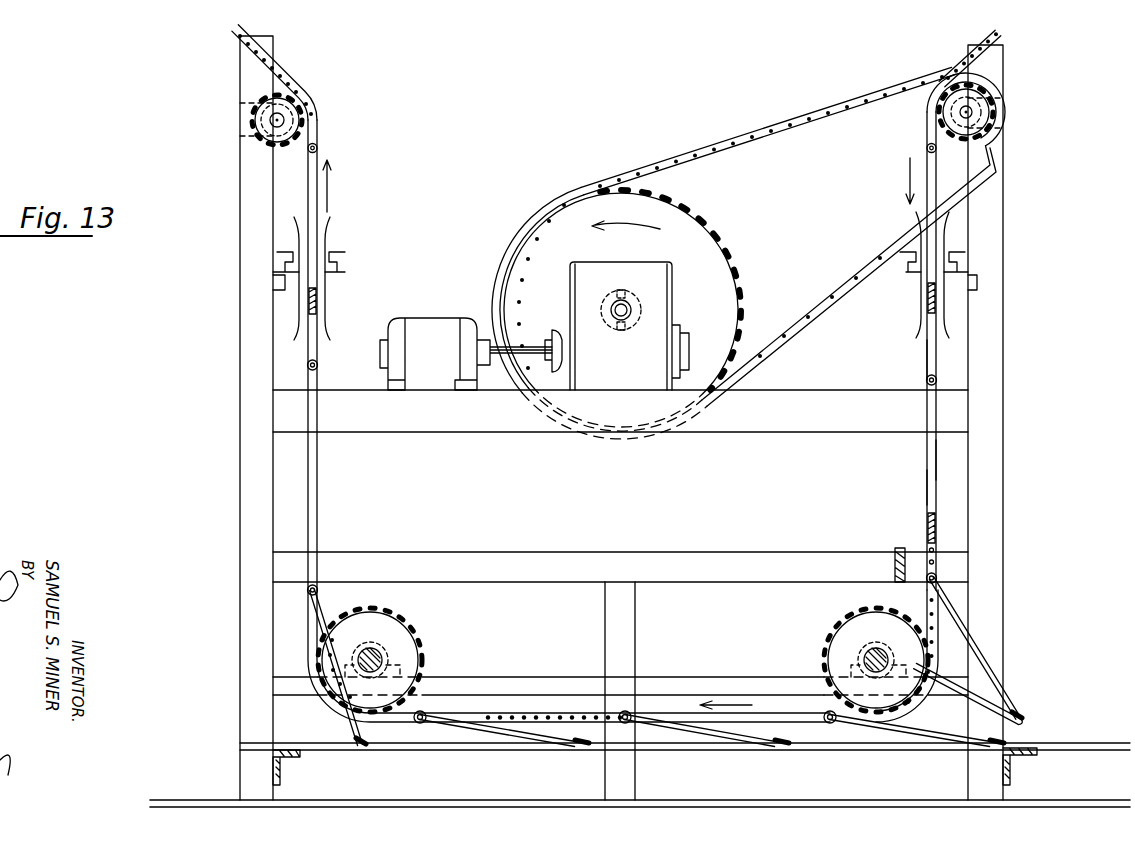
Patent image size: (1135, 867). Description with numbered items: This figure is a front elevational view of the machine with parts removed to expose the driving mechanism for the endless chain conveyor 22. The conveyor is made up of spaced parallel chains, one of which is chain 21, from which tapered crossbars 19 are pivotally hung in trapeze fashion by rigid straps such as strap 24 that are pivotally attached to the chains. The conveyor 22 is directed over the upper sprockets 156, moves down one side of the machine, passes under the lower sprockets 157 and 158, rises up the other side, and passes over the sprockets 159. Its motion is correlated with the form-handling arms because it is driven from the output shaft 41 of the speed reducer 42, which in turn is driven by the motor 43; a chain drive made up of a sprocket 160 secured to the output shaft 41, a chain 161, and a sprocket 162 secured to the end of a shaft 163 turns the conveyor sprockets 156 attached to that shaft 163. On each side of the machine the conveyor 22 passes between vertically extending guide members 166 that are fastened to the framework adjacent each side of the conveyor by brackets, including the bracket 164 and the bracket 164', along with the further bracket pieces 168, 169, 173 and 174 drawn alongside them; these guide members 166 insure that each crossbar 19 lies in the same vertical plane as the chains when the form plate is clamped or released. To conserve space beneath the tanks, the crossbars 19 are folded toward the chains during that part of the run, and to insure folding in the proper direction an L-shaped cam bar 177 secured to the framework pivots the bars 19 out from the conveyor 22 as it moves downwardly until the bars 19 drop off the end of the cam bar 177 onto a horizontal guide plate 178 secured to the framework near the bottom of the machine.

The tapered crossbar 19 is at (305, 298).
The chain 21 is at (930, 355).
The endless chain conveyor 22 is at (963, 458).
The rigid strap 24 is at (928, 482).
The output shaft 41 is at (632, 296).
The speed reducer 42 is at (673, 298).
The motor 43 is at (430, 328).
The sprocket 156 is at (984, 120).
The sprocket 157 is at (830, 642).
The sprocket 158 is at (413, 643).
The sprocket 159 is at (250, 124).
The sprocket 160 is at (710, 233).
The chain 161 is at (722, 155).
The sprocket 162 is at (920, 108).
The shaft 163 is at (975, 122).
The bracket 164 is at (1011, 277).
The bracket 164' is at (236, 289).
The guide member 166 is at (300, 326).
The support bracket 168 is at (910, 265).
The support bracket 169 is at (963, 260).
The support bracket 173 is at (286, 250).
The support bracket 174 is at (337, 258).
The L-shaped cam bar 177 is at (973, 705).
The horizontal guide plate 178 is at (820, 752).